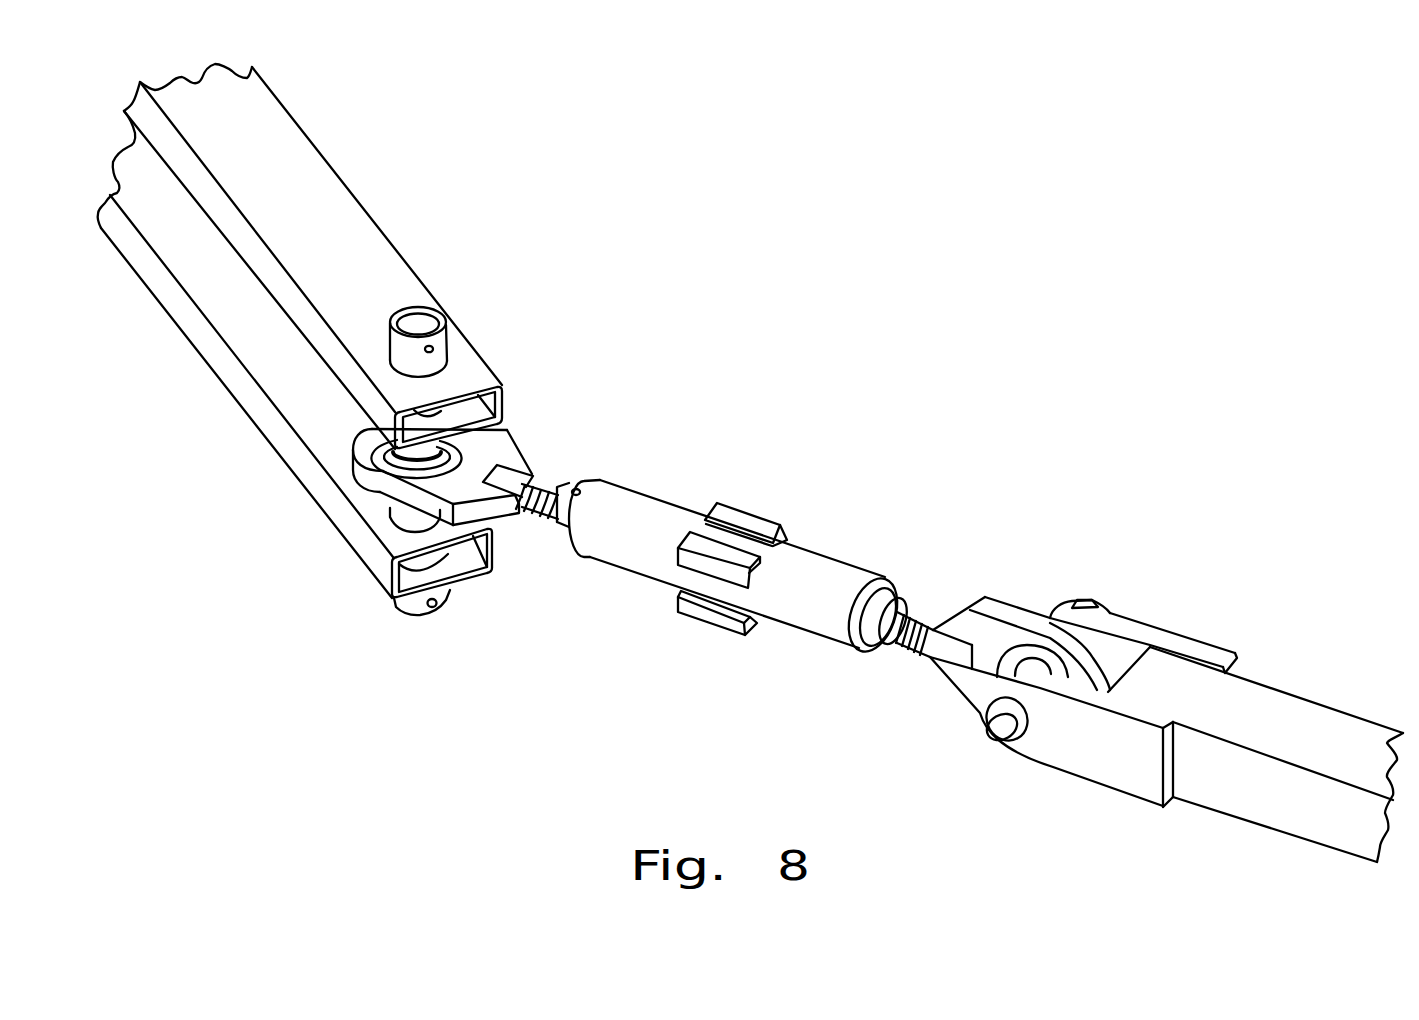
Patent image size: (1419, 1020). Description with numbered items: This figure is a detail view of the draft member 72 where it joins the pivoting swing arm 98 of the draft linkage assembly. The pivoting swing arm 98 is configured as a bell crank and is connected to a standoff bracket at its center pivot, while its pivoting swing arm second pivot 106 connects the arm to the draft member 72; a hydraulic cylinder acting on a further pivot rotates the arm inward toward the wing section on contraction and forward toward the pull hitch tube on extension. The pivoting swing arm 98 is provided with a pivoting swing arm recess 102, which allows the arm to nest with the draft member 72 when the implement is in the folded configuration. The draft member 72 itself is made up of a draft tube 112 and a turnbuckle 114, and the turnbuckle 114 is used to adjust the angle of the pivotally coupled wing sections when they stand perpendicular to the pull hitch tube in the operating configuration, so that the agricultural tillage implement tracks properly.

The pivoting swing arm 98 is at (361, 205).
The pivoting swing arm recess 102 is at (267, 343).
The pivoting swing arm second pivot 106 is at (441, 313).
The draft member 72 is at (960, 538).
The turnbuckle 114 is at (777, 510).
The draft tube 112 is at (1286, 689).